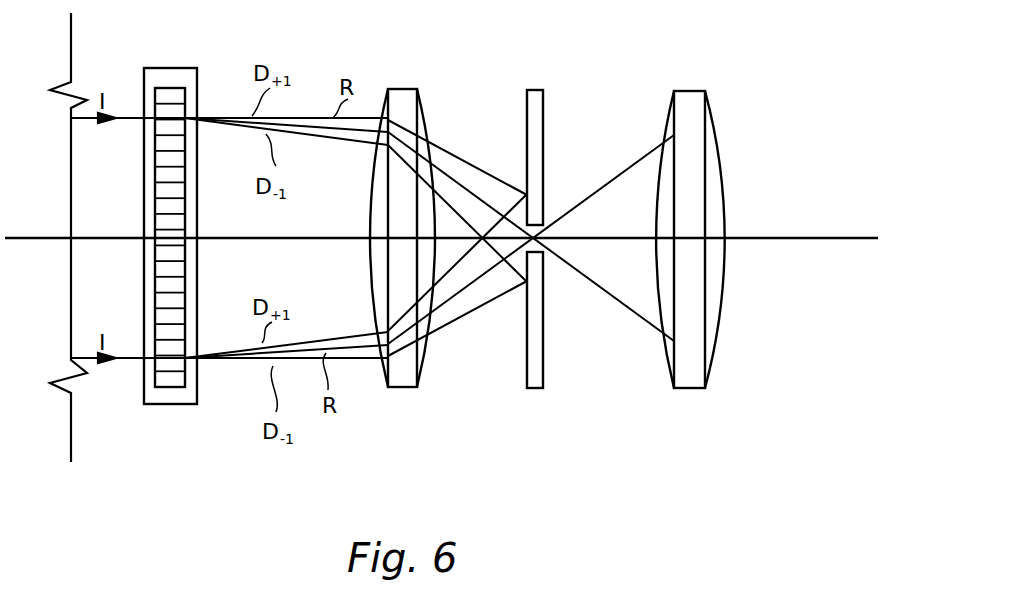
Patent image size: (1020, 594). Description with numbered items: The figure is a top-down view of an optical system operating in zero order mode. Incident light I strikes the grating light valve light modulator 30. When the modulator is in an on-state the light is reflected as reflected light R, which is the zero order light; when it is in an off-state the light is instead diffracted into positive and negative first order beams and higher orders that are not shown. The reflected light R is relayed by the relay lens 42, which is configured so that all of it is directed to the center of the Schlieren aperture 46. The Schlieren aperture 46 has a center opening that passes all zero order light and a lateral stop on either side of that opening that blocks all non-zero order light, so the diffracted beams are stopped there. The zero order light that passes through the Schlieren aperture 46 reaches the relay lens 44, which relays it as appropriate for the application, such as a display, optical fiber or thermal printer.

The grating light valve light modulator 30 is at (167, 406).
The relay lens 42 is at (398, 389).
The relay lens 44 is at (683, 390).
The Schlieren aperture 46 is at (536, 402).